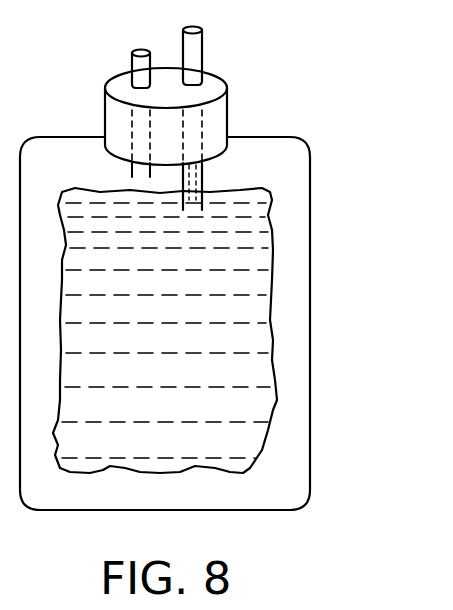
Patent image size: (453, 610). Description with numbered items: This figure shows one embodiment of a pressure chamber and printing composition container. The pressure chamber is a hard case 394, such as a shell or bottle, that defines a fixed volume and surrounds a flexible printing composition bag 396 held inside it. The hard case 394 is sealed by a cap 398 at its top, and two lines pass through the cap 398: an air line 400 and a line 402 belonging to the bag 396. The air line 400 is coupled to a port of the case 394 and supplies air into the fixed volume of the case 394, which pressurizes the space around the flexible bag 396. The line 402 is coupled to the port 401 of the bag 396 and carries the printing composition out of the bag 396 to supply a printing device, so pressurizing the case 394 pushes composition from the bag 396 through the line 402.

The hard case 394 is at (310, 356).
The flexible printing composition bag 396 is at (262, 318).
The cap 398 is at (216, 126).
The air line 400 is at (140, 69).
The port 401 is at (203, 197).
The line 402 is at (197, 60).